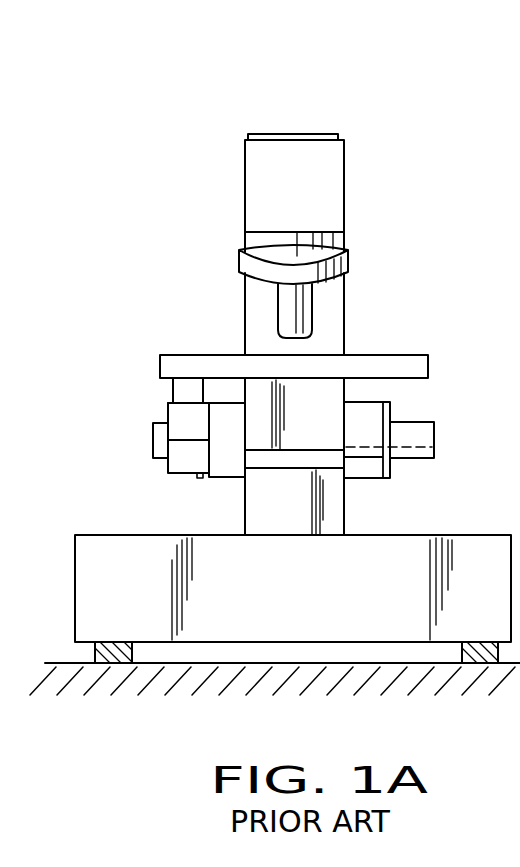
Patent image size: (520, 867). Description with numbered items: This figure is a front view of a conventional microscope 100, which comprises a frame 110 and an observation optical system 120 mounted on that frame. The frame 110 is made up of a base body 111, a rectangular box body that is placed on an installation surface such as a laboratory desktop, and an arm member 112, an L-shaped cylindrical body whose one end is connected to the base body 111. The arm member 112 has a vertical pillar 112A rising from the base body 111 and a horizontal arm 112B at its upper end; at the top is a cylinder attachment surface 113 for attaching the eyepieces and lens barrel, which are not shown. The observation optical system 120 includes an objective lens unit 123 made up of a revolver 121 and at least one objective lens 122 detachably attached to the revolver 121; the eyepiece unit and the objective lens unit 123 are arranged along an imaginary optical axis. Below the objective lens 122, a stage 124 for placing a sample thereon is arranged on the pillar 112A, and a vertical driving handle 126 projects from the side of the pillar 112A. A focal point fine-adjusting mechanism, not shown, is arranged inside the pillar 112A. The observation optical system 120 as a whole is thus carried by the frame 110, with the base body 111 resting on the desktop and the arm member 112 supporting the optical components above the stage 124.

The microscope 100 is at (275, 378).
The frame 110 is at (275, 586).
The base body 111 is at (460, 542).
The arm member 112 is at (382, 337).
The pillar 112A is at (345, 292).
The horizontal arm 112B is at (345, 172).
The cylinder attachment surface 113 is at (297, 133).
The observation optical system 120 is at (297, 275).
The revolver 121 is at (349, 268).
The objective lens 122 is at (313, 317).
The objective lens unit 123 is at (362, 246).
The stage 124 is at (422, 364).
The vertical driving handle 126 is at (426, 437).